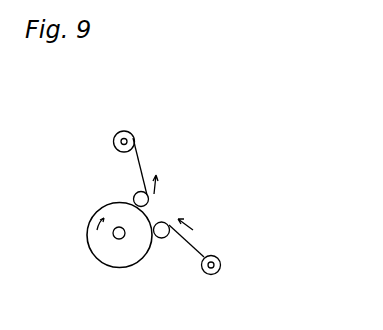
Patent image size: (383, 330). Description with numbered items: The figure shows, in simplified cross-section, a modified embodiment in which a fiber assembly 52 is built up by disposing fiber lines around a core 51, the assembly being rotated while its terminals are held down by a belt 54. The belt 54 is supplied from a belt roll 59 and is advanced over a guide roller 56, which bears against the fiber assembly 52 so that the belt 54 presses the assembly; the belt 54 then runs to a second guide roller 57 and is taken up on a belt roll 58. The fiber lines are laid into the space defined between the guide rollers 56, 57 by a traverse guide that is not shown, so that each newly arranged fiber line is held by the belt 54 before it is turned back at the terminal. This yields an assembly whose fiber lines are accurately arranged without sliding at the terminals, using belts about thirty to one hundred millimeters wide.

The core 51 is at (119, 239).
The fiber assembly 52 is at (132, 258).
The belt 54 is at (147, 167).
The guide roller 56 is at (161, 238).
The guide roller 57 is at (134, 200).
The belt roll 58 is at (123, 130).
The belt roll 59 is at (221, 258).